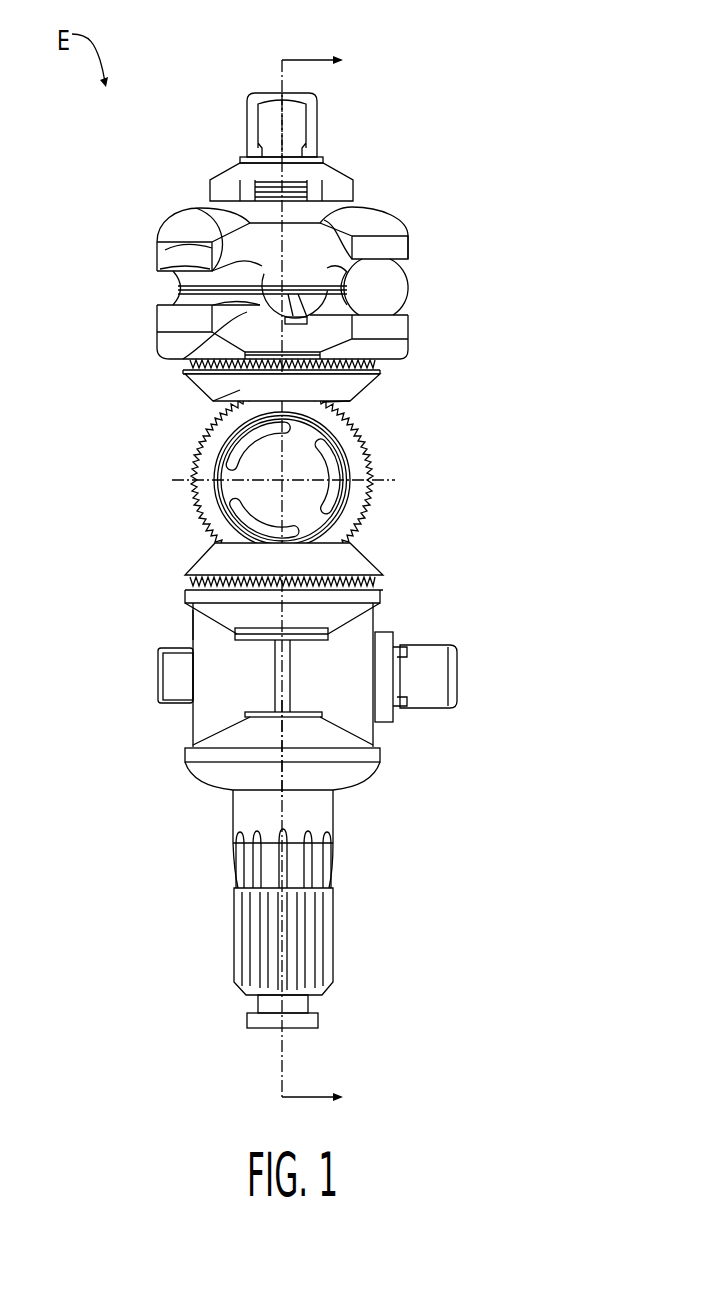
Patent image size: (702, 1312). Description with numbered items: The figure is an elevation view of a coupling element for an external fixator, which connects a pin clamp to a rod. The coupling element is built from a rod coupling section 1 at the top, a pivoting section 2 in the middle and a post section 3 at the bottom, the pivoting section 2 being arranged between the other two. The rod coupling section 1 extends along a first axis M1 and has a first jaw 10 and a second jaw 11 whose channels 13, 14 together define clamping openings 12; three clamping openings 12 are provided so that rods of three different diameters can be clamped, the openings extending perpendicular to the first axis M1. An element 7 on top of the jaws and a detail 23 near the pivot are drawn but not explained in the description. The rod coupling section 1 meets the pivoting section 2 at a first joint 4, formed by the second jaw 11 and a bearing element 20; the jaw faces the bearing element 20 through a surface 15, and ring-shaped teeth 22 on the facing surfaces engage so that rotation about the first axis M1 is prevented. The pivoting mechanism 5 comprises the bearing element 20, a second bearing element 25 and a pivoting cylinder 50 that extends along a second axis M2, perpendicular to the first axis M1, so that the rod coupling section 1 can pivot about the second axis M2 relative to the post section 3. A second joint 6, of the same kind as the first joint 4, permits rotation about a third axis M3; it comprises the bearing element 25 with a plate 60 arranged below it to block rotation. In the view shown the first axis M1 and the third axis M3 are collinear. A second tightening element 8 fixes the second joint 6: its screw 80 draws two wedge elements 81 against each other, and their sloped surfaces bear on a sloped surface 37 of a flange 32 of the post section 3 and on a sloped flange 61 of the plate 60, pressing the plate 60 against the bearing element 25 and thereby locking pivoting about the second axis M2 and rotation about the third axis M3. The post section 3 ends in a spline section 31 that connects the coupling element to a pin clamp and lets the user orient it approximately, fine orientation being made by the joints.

The rod coupling section 1 is at (397, 223).
The pivoting section 2 is at (363, 505).
The post section 3 is at (240, 815).
The first joint 4 is at (368, 376).
The pivoting mechanism 5 is at (247, 507).
The second joint 6 is at (345, 610).
The top knob 7 is at (268, 112).
The second tightening element 8 is at (445, 678).
The first jaw 10 is at (163, 254).
The second jaw 11 is at (163, 322).
The clamping opening 12 is at (380, 288).
The channel 13 is at (250, 254).
The channel 14 is at (245, 312).
The surface 15 is at (240, 388).
The bearing element 20 is at (352, 391).
The teeth 22 is at (335, 340).
The gear rim 23 is at (322, 402).
The second bearing element 25 is at (345, 560).
The spline section 31 is at (247, 942).
The flange 32 is at (223, 738).
The sloped surface 37 is at (381, 762).
The pivoting cylinder 50 is at (363, 468).
The plate 60 is at (350, 655).
The sloped flange 61 is at (207, 618).
The screw 80 is at (430, 698).
The wedge elements 81 is at (207, 645).
The first axis M1 is at (285, 142).
The second axis M2 is at (287, 470).
The third axis M3 is at (283, 742).